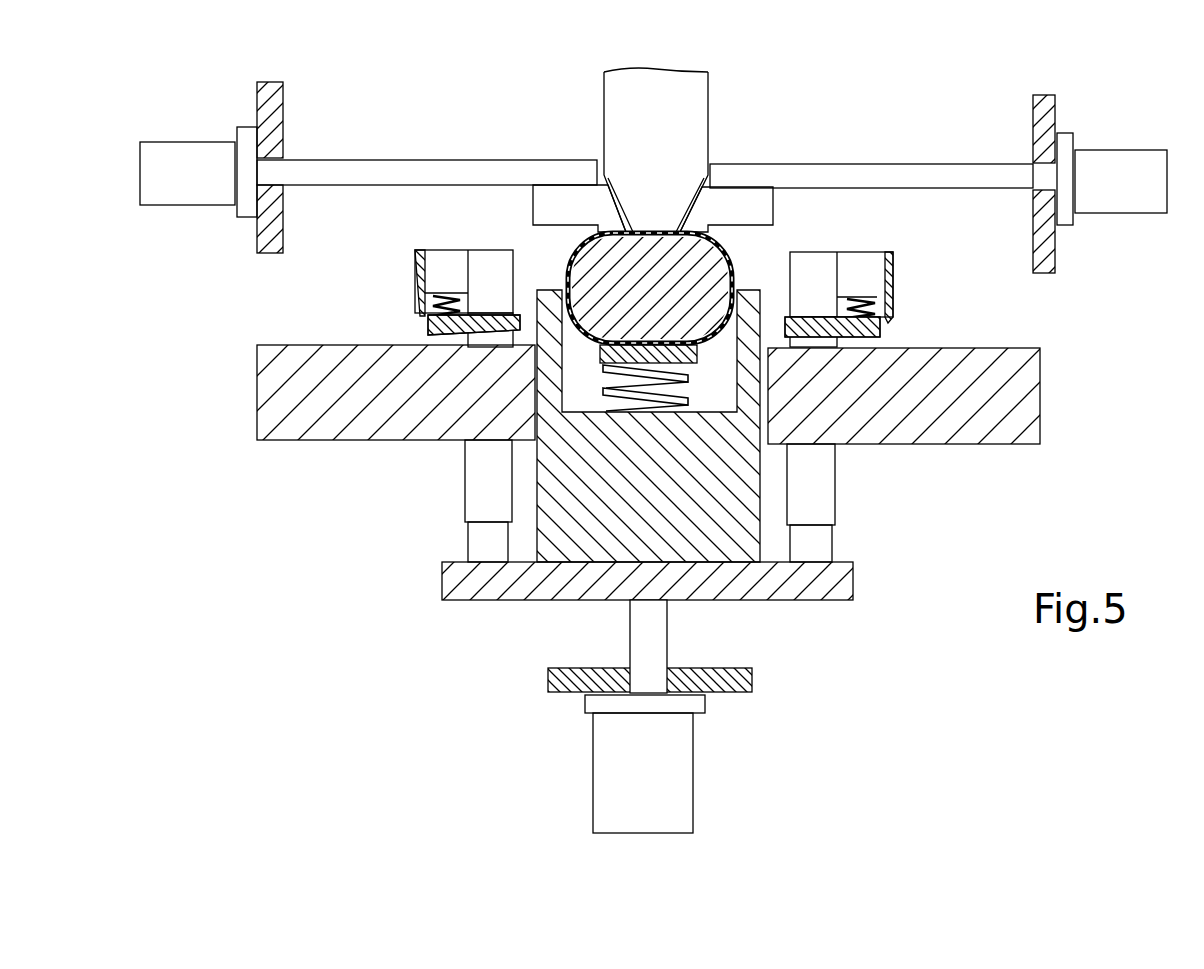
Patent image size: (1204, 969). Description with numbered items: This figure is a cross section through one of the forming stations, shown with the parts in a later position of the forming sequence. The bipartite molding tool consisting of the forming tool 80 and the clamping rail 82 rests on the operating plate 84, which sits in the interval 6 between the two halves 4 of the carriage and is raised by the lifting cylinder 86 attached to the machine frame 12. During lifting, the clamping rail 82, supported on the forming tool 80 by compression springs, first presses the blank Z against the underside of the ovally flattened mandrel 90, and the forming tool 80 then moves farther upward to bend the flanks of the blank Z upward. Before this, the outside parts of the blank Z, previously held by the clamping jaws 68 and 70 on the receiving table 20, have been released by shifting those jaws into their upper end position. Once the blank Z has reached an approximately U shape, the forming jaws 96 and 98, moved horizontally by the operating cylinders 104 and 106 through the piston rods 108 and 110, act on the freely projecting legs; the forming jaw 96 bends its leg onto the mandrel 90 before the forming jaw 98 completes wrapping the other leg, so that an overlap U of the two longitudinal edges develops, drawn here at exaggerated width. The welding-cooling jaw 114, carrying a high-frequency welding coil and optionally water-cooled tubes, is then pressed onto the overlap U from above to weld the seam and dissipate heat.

The carriage half 4 is at (293, 435).
The interval 6 is at (762, 440).
The machine frame 12 is at (717, 668).
The receiving table 20 is at (401, 255).
The clamping jaw 68 is at (880, 330).
The clamping jaw 70 is at (428, 325).
The forming tool 80 is at (762, 498).
The clamping rail 82 is at (697, 357).
The operating plate 84 is at (853, 584).
The lifting cylinder 86 is at (693, 757).
The mandrel 90 is at (592, 277).
The forming jaw 96 is at (533, 210).
The forming jaw 98 is at (773, 210).
The operating cylinder 104 is at (170, 192).
The operating cylinder 106 is at (1116, 160).
The piston rod 108 is at (398, 170).
The piston rod 110 is at (896, 170).
The welding-cooling jaw 114 is at (697, 103).
The overlap U is at (658, 227).
The blank Z is at (730, 262).